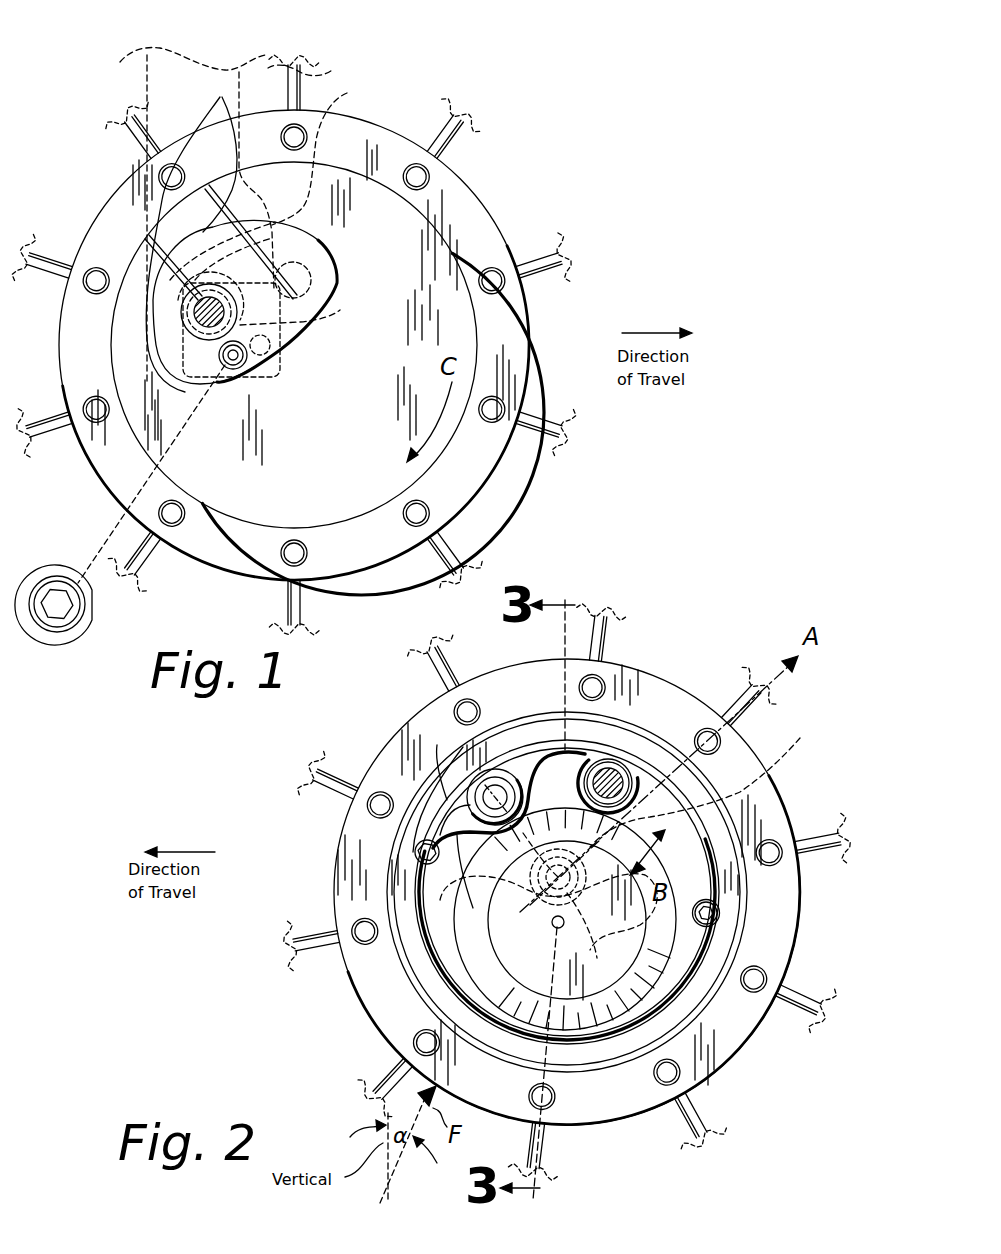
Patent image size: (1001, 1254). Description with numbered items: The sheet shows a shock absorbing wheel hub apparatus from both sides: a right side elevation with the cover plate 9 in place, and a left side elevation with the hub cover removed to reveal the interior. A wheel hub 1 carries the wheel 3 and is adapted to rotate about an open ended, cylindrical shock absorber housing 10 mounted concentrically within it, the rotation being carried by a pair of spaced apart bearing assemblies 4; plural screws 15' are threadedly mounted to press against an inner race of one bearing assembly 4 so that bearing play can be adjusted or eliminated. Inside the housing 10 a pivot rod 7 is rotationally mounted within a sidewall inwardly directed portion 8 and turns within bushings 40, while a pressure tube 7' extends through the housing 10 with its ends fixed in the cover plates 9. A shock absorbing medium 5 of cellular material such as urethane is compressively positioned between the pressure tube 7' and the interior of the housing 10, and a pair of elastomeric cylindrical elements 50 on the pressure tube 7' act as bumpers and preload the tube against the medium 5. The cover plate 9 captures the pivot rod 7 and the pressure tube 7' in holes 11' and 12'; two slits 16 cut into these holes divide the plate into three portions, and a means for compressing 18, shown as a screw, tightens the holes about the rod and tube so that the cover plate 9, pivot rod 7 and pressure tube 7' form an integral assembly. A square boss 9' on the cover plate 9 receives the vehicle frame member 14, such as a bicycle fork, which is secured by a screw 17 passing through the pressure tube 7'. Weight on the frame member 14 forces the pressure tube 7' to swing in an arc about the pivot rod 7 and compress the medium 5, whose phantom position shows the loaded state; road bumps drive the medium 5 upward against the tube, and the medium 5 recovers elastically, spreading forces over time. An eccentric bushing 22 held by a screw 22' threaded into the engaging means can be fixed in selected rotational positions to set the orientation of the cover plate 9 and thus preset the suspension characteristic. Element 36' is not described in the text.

In FIG. 1, the wheel hub 1 is at (528, 380).
In FIG. 2, the wheel hub 1 is at (748, 1030).
In FIG. 1, the wheel 3 is at (515, 266).
In FIG. 2, the wheel 3 is at (797, 1000).
In FIG. 2, the bearing assemblies 4 is at (733, 933).
In FIG. 2, the shock absorbing medium 5 is at (473, 960).
In FIG. 2, the pivot rod 7 is at (490, 765).
In FIG. 2, the pressure tube 7' is at (681, 785).
In FIG. 2, the sidewall inwardly directed portion 8 is at (492, 783).
In FIG. 1, the cover plate 9 is at (299, 275).
In FIG. 1, the boss 9' is at (201, 302).
In FIG. 2, the shock absorber housing 10 is at (447, 817).
In FIG. 1, the hole 11' is at (330, 273).
In FIG. 1, the hole 12' is at (295, 311).
In FIG. 1, the vehicle frame member 14 is at (145, 68).
In FIG. 2, the screws 15' is at (568, 880).
In FIG. 1, the slits 16 is at (221, 233).
In FIG. 2, the screw 17 is at (602, 765).
In FIG. 1, the means for compressing 18 is at (326, 151).
In FIG. 1, the bushing 22 is at (162, 498).
In FIG. 1, the screw 22' is at (53, 635).
In FIG. 2, the connection line 36' is at (470, 884).
In FIG. 2, the bushings 40 is at (436, 838).
In FIG. 2, the elastomeric cylindrical elements 50 is at (610, 770).